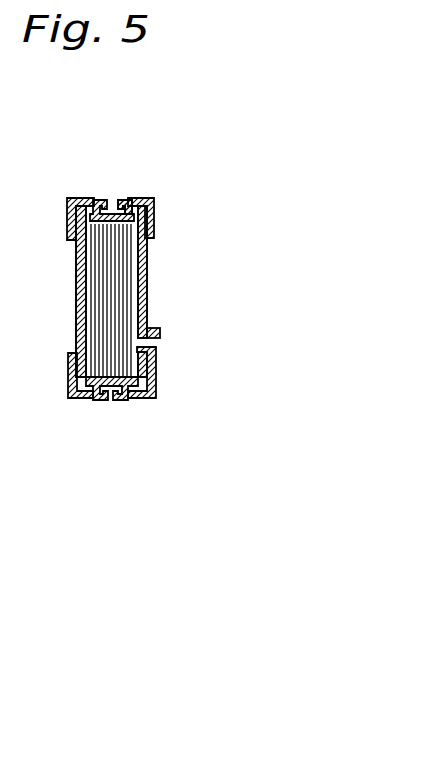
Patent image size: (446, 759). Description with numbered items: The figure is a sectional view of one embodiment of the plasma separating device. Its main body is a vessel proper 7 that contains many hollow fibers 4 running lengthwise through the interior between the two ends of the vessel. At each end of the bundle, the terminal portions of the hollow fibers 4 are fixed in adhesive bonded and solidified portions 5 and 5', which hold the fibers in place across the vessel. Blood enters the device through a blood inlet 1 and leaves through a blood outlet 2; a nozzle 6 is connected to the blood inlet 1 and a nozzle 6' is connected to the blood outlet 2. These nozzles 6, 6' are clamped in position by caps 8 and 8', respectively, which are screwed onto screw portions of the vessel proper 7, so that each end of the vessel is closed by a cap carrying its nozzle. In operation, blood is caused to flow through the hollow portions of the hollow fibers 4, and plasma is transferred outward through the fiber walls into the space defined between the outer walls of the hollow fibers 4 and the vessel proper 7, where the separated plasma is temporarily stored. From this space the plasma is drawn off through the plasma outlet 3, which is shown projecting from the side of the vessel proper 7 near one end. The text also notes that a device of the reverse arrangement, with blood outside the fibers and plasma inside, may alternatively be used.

The blood inlet 1 is at (112, 402).
The blood outlet 2 is at (112, 196).
The plasma outlet 3 is at (161, 341).
The hollow fibers 4 is at (147, 273).
The adhesive bonded and solidified portion 5 is at (163, 372).
The adhesive bonded and solidified portion 5' is at (164, 218).
The nozzle 6 is at (101, 412).
The nozzle 6' is at (142, 181).
The vessel proper 7 is at (147, 312).
The cap 8 is at (56, 375).
The cap 8' is at (56, 219).